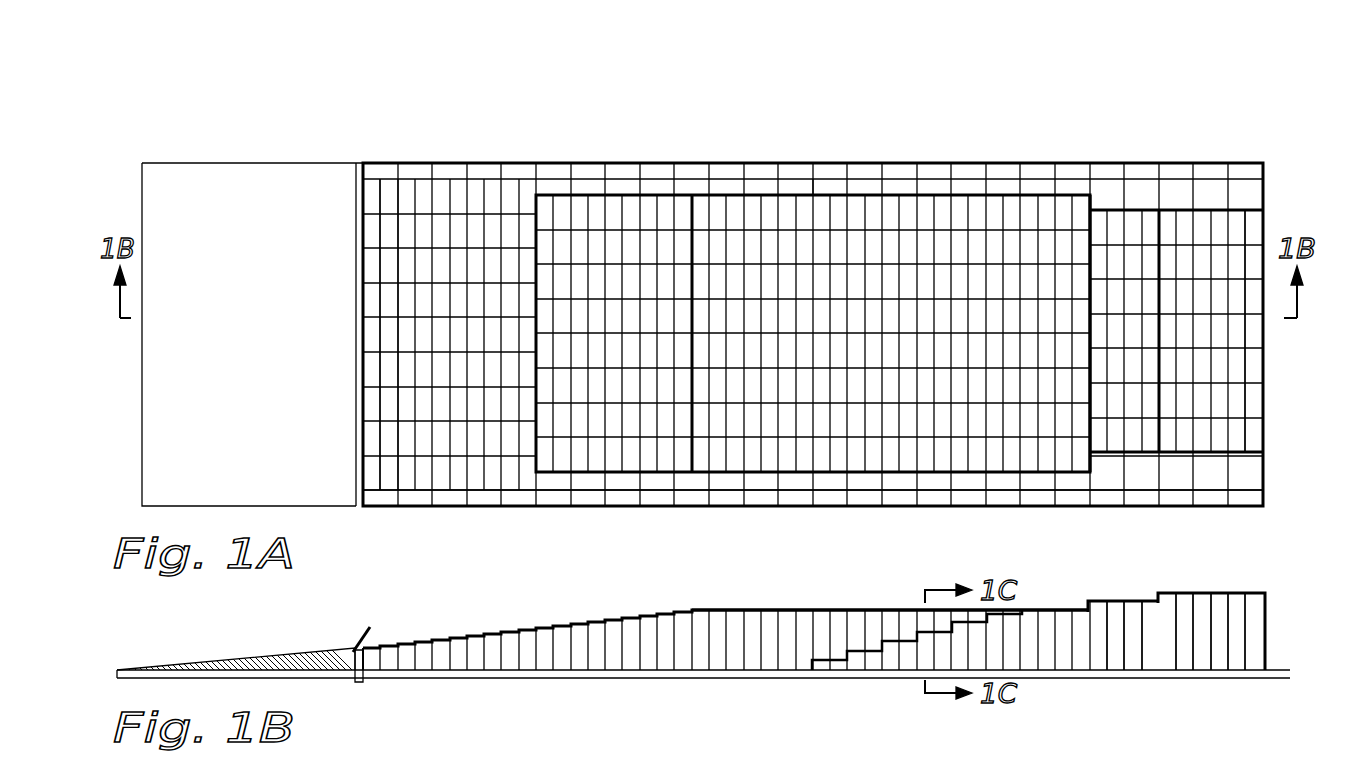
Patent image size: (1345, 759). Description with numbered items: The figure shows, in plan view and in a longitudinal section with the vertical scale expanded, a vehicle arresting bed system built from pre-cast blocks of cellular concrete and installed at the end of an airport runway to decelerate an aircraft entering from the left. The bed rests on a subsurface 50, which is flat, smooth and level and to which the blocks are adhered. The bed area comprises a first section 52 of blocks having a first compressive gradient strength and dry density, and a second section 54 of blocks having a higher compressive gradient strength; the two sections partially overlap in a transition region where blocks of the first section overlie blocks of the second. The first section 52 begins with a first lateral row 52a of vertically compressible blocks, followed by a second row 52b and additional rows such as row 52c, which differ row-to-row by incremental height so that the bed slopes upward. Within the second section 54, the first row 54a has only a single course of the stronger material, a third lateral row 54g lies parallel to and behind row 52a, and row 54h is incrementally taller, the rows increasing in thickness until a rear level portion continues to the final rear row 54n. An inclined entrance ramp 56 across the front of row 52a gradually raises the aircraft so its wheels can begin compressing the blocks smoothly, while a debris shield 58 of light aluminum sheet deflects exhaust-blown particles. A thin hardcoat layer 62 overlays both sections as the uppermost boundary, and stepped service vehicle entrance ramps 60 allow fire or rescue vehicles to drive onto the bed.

In FIG. 1B, the subsurface 50 is at (523, 679).
In FIG. 1A, the first section 52 is at (813, 108).
In FIG. 1A, the second section 54 is at (1265, 108).
In FIG. 1A, the first lateral row 52a is at (368, 197).
In FIG. 1B, the first lateral row 52a is at (368, 650).
In FIG. 1A, the second row 52b is at (390, 195).
In FIG. 1A, the additional lateral row 52c is at (407, 193).
In FIG. 1B, the first row of blocks of second section 54a is at (822, 664).
In FIG. 1B, the third lateral row 54g is at (1082, 618).
In FIG. 1B, the lateral row 54h is at (1098, 608).
In FIG. 1A, the final rear row 54n is at (1255, 222).
In FIG. 1B, the final rear row 54n is at (1258, 600).
In FIG. 1B, the inclined entrance ramp 56 is at (240, 662).
In FIG. 1B, the debris shield 58 is at (354, 650).
In FIG. 1A, the service vehicle entrance ramps 60 is at (832, 498).
In FIG. 1B, the hardcoat layer 62 is at (716, 608).